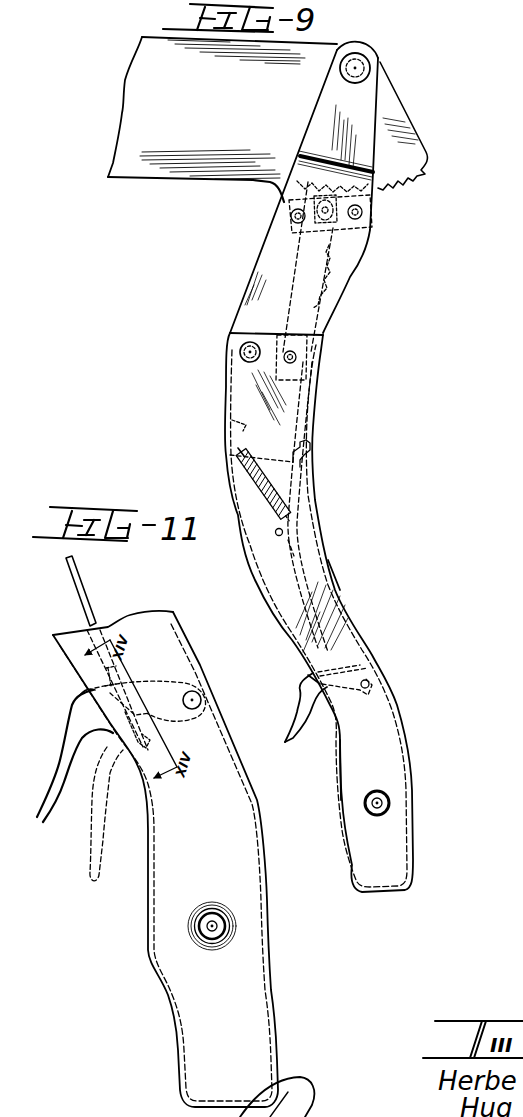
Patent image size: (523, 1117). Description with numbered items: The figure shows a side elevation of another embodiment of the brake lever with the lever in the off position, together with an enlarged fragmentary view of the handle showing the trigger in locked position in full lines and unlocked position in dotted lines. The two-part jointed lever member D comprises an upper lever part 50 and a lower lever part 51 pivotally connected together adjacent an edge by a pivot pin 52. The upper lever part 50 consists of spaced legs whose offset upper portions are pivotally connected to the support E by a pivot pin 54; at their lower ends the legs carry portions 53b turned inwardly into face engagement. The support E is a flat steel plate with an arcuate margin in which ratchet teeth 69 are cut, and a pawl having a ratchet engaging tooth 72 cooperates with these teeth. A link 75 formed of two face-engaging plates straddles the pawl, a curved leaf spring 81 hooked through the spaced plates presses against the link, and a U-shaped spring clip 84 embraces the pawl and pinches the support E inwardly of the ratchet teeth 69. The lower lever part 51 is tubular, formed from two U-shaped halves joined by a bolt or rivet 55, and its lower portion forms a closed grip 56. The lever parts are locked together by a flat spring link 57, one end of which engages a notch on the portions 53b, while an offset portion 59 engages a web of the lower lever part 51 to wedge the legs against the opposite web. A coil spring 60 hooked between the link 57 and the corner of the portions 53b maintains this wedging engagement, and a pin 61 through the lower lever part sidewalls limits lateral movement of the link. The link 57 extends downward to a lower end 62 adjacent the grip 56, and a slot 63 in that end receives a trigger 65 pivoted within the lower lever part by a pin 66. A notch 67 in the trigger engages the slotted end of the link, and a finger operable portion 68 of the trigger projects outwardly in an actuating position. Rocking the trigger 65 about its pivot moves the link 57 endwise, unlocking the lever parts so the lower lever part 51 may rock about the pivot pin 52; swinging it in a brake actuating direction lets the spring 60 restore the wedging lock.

In FIG. 9, the support E is at (322, 48).
In FIG. 9, the two-part jointed lever member D is at (322, 420).
In FIG. 9, the upper lever part 50 is at (360, 275).
In FIG. 9, the lower lever part 51 is at (339, 549).
In FIG. 9, the pivot pin 52 is at (242, 351).
In FIG. 9, the inwardly turned portions 53b is at (243, 428).
In FIG. 9, the pivot pin 54 is at (371, 60).
In FIG. 9, the bolt or rivet 55 is at (380, 803).
In FIG. 11, the bolt or rivet 55 is at (216, 926).
In FIG. 9, the closed grip 56 is at (341, 811).
In FIG. 11, the closed grip 56 is at (147, 924).
In FIG. 9, the flat spring link 57 is at (293, 552).
In FIG. 11, the flat spring link 57 is at (88, 597).
In FIG. 9, the offset portion 59 is at (312, 447).
In FIG. 9, the coil spring 60 is at (258, 505).
In FIG. 9, the pin 61 is at (278, 537).
In FIG. 9, the lower end of link 62 is at (320, 670).
In FIG. 11, the lower end of link 62 is at (141, 722).
In FIG. 9, the slot 63 is at (322, 678).
In FIG. 11, the slot 63 is at (121, 680).
In FIG. 9, the trigger 65 is at (307, 678).
In FIG. 11, the trigger 65 is at (75, 702).
In FIG. 9, the pin 66 is at (370, 684).
In FIG. 11, the pin 66 is at (201, 699).
In FIG. 11, the notch 67 is at (150, 690).
In FIG. 9, the finger operable portion 68 is at (294, 714).
In FIG. 11, the finger operable portion 68 is at (54, 783).
In FIG. 9, the ratchet teeth 69 is at (420, 178).
In FIG. 9, the ratchet engaging tooth 72 is at (294, 155).
In FIG. 9, the link 75 is at (298, 265).
In FIG. 9, the leaf spring 81 is at (329, 273).
In FIG. 9, the spring clip 84 is at (372, 203).